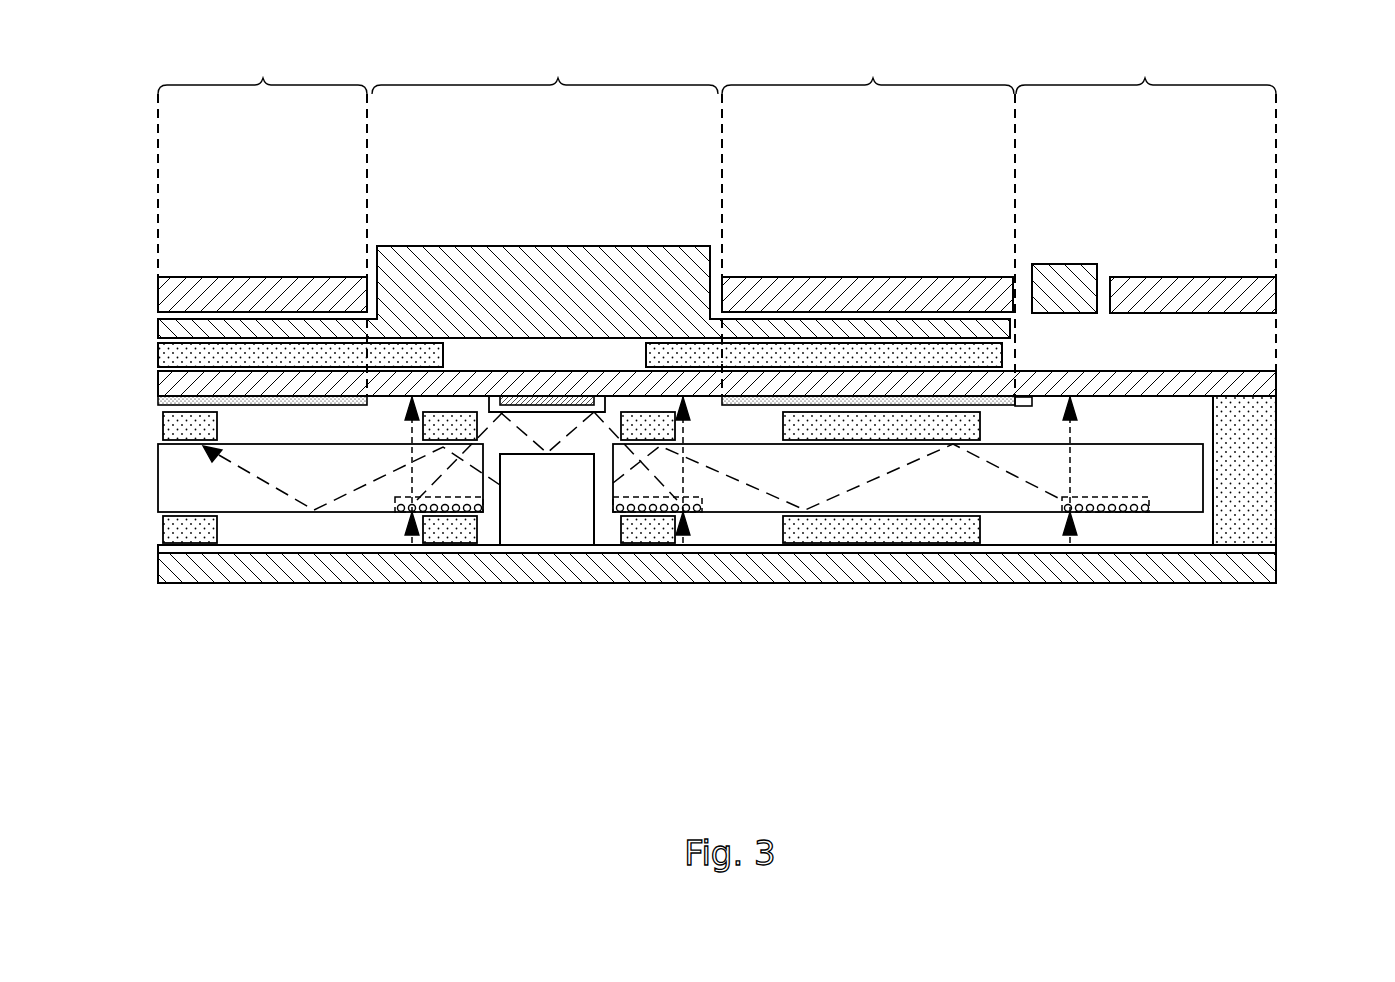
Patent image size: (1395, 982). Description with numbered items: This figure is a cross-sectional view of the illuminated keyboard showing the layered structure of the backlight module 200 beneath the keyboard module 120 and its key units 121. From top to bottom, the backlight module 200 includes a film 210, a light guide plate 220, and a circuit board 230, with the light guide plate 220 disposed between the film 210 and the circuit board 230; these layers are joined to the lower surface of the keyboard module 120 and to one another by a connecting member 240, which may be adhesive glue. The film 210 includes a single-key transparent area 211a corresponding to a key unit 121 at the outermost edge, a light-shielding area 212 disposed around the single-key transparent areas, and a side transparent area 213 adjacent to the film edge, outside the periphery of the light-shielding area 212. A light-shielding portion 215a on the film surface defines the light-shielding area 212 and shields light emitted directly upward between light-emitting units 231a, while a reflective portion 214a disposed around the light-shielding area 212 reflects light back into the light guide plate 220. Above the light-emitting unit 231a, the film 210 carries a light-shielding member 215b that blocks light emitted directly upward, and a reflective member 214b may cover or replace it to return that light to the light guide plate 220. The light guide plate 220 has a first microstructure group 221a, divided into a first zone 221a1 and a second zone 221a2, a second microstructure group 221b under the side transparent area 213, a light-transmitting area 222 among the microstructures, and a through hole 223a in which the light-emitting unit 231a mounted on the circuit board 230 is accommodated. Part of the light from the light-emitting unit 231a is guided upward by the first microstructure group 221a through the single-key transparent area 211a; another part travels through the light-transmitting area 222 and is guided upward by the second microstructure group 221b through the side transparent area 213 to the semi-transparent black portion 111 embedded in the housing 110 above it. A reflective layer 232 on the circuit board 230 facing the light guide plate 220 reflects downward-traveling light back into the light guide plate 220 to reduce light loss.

The housing 110 is at (1272, 293).
The semi-transparent black portion 111 is at (1057, 280).
The keyboard module 120 is at (158, 330).
The key unit 121 is at (445, 262).
The backlight module 200 is at (718, 470).
The film 210 is at (1267, 383).
The single-key transparent area 211a is at (545, 69).
The light-shielding area 212 is at (586, 220).
The side transparent area 213 is at (1145, 220).
The reflective portion 214a is at (1022, 407).
The reflective member 214b is at (600, 405).
The light-shielding portion 215a is at (280, 400).
The light-shielding member 215b is at (537, 397).
The light guide plate 220 is at (168, 478).
The first microstructure group 221a is at (542, 575).
The first zone 221a1 is at (665, 548).
The second zone 221a2 is at (411, 548).
The second microstructure group 221b is at (1076, 537).
The light-transmitting area 222 is at (893, 483).
The through hole 223a is at (607, 530).
The circuit board 230 is at (158, 567).
The light-emitting unit 231a is at (546, 508).
The reflective layer 232 is at (158, 548).
The connecting member 240 is at (158, 352).